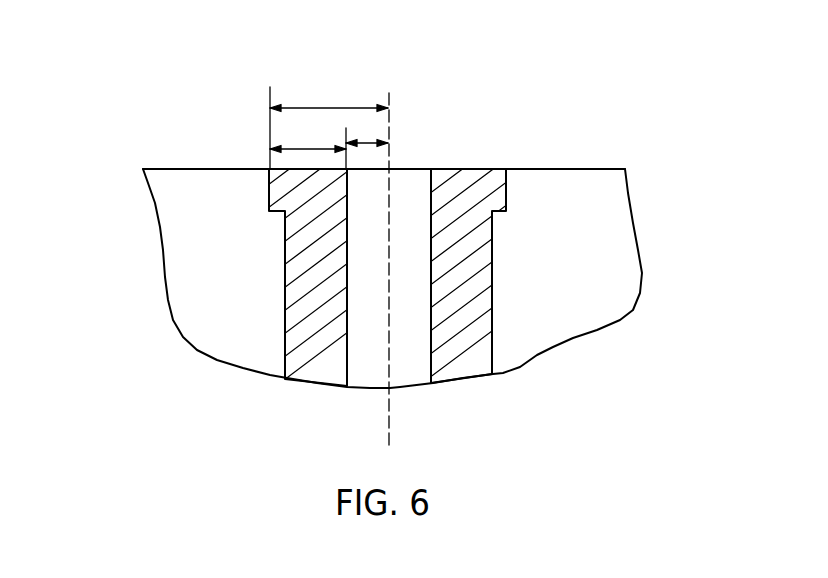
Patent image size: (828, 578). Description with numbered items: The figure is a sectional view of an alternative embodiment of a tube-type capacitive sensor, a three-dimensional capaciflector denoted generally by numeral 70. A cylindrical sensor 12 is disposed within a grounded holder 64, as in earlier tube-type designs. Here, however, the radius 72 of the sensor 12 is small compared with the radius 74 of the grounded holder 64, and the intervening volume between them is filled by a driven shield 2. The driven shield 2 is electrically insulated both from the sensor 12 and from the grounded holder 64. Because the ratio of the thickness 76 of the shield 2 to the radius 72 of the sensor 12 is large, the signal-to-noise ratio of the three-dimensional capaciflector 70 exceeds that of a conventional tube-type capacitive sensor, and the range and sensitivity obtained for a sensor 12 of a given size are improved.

The three-dimensional capaciflector 70 is at (345, 232).
The grounded holder 64 is at (366, 284).
The driven shield 2 is at (423, 242).
The sensor 12 is at (449, 271).
The radius of grounded holder 74 is at (329, 92).
The thickness of shield 76 is at (327, 113).
The radius of sensor 72 is at (415, 105).